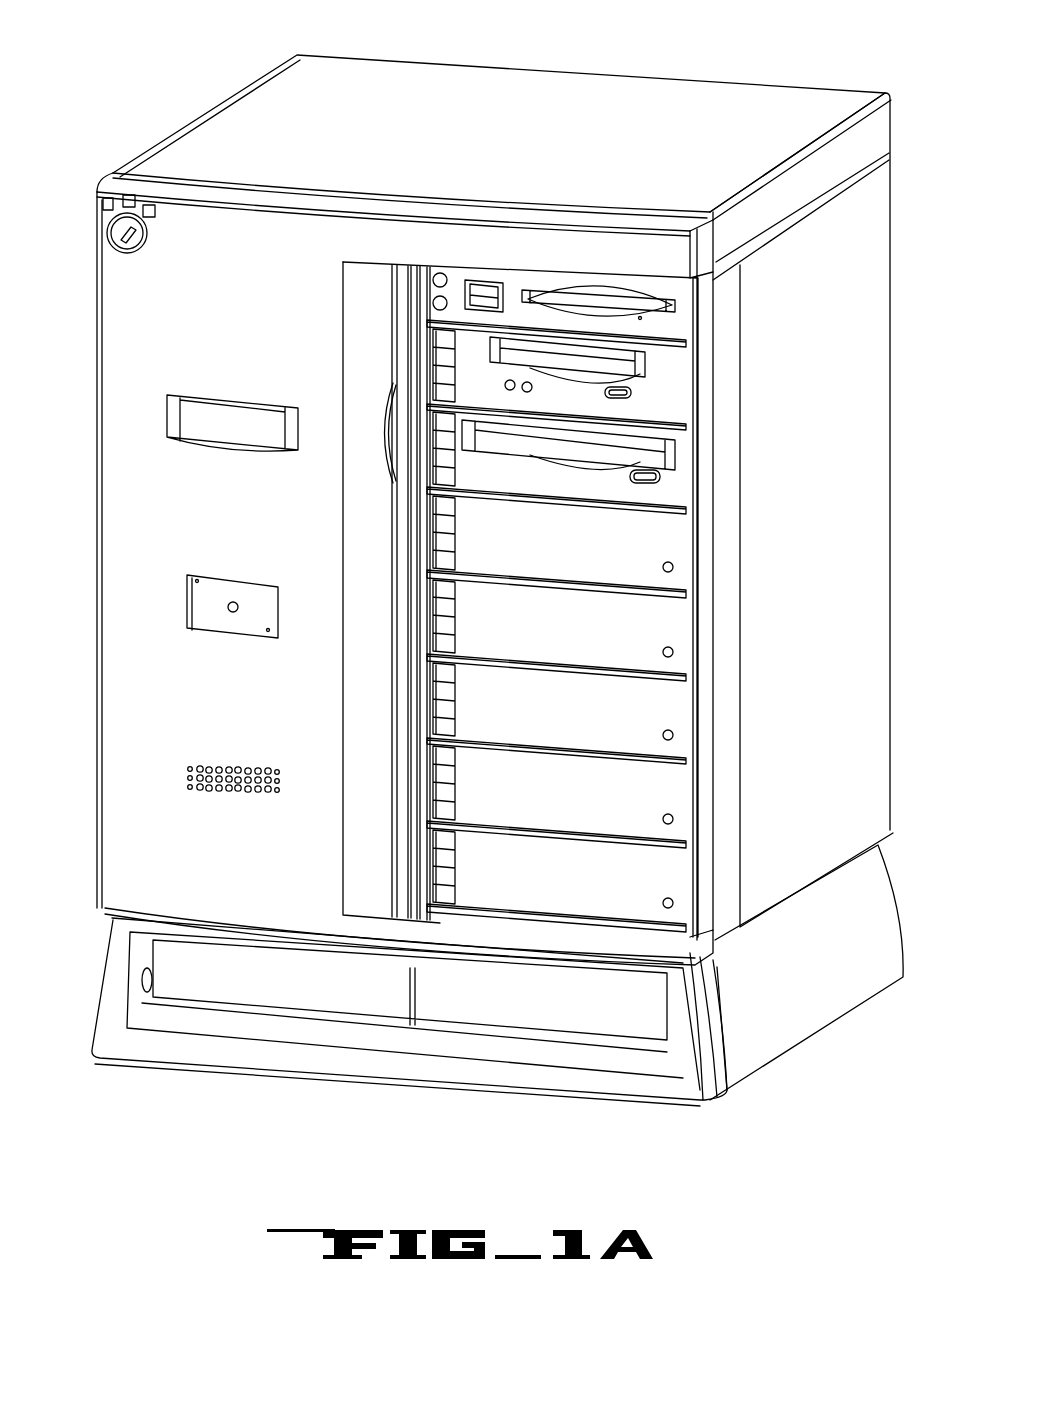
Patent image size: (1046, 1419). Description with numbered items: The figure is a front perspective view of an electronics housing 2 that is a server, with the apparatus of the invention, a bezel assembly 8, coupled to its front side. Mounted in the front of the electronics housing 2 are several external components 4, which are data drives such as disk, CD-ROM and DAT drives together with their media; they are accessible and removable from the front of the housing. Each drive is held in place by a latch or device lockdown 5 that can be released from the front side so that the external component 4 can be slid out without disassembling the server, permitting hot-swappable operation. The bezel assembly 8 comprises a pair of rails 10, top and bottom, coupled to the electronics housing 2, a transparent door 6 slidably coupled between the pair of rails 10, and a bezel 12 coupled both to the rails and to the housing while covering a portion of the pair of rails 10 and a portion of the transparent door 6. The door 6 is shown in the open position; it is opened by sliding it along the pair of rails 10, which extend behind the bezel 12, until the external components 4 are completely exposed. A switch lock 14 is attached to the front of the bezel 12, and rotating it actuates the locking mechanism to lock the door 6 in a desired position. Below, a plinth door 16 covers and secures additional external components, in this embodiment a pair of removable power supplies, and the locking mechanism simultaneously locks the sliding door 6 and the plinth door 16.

The electronics housing 2 is at (643, 106).
The external components 4 is at (675, 483).
The device lockdowns 5 is at (445, 540).
The transparent door 6 is at (407, 775).
The bezel assembly 8 is at (290, 258).
The pair of rails 10 is at (510, 305).
The bezel 12 is at (158, 690).
The switch lock 14 is at (108, 228).
The plinth door 16 is at (690, 1085).